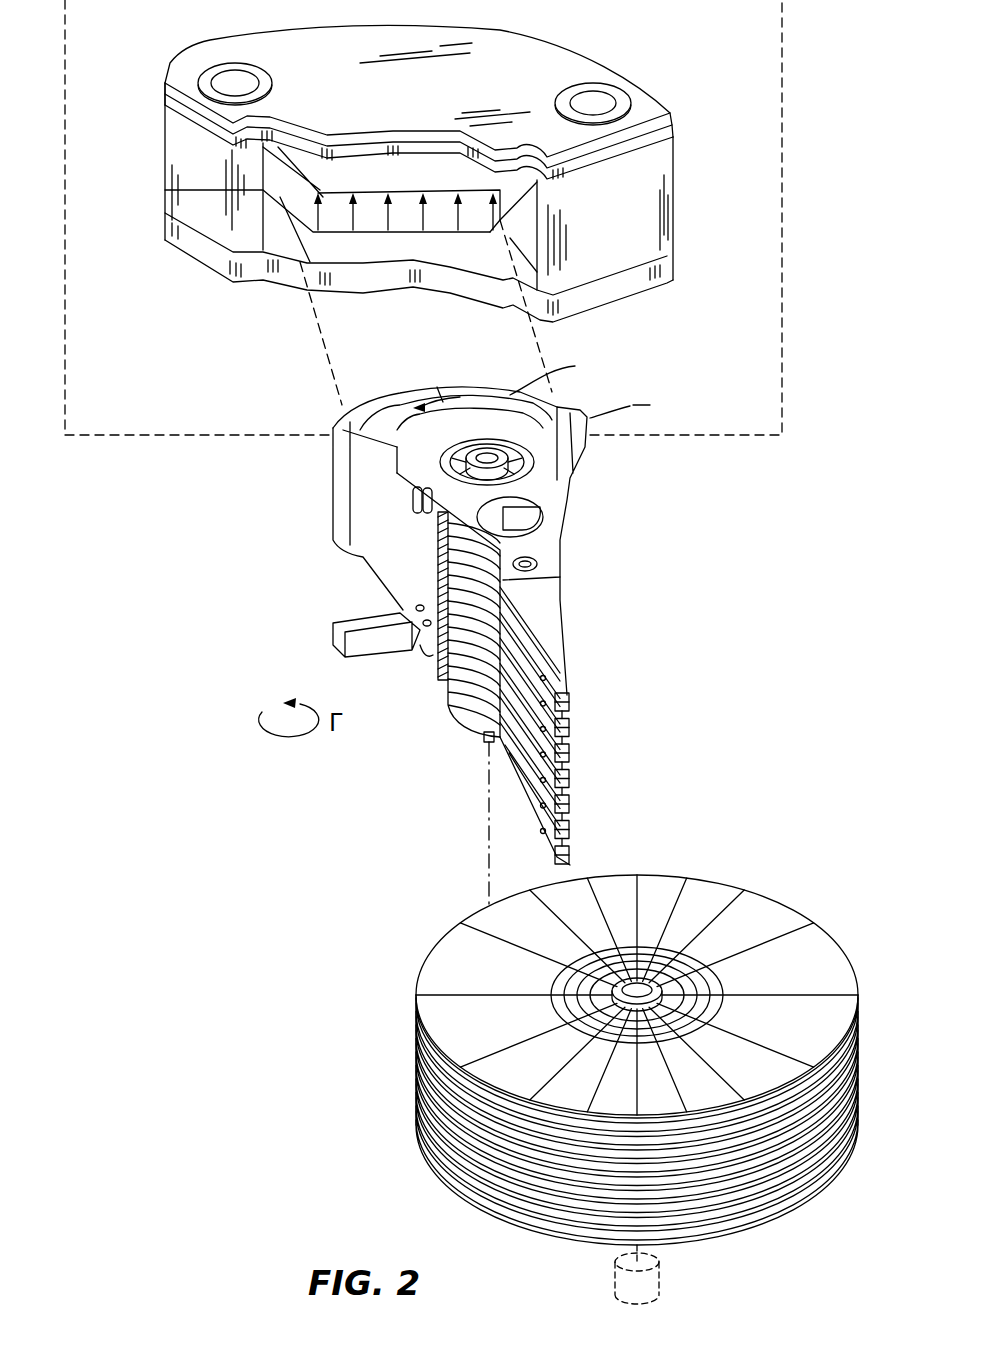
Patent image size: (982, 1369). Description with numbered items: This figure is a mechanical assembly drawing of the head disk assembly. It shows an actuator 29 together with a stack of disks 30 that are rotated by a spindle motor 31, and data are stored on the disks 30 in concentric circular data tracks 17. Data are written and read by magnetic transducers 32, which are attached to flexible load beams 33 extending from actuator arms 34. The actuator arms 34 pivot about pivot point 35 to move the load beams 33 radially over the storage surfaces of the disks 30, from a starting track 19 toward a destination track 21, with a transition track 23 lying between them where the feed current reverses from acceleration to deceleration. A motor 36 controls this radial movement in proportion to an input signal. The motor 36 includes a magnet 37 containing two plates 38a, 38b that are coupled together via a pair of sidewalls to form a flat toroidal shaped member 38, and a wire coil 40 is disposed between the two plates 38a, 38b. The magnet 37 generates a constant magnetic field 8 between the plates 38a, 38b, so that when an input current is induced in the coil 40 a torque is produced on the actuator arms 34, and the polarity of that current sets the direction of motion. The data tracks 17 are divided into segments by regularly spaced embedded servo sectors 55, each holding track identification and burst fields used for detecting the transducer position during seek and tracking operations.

The magnetic field lines 8 is at (165, 192).
The concentric circular data tracks 17 is at (667, 947).
The starting track 19 is at (710, 967).
The destination track 21 is at (722, 987).
The transition track 23 is at (698, 958).
The actuator 29 is at (140, 540).
The disks 30 is at (737, 1223).
The spindle motor 31 is at (613, 1281).
The magnetic transducers 32 is at (572, 697).
The flexible load beams 33 is at (558, 627).
The actuator arms 34 is at (558, 542).
The pivot point 35 is at (530, 462).
The motor 36 is at (783, 201).
The magnet 37 is at (545, 32).
The flat toroidal shaped member 38 is at (657, 200).
The plate 38a is at (372, 170).
The plate 38b is at (363, 253).
The wire coil 40 is at (366, 405).
The embedded servo sectors 55 is at (443, 996).